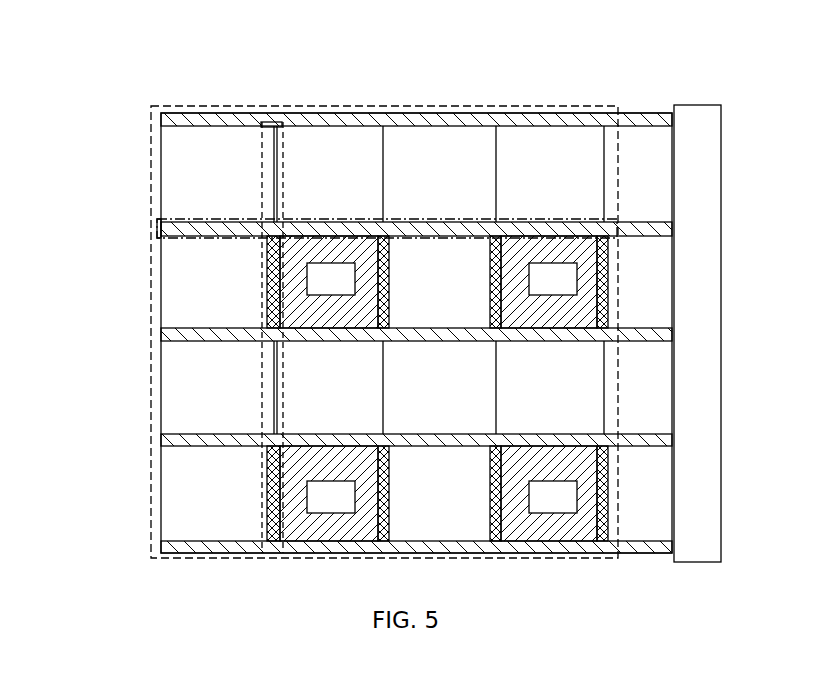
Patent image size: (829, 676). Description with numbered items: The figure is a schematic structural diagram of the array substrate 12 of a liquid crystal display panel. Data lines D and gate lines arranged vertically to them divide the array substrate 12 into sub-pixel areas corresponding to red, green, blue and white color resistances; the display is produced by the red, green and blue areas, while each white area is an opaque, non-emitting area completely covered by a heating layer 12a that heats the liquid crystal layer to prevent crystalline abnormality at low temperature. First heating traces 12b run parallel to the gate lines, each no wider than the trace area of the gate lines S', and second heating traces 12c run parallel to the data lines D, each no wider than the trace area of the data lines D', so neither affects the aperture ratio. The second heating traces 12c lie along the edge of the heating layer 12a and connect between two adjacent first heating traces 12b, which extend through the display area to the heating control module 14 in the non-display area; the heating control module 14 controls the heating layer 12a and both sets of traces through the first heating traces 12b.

The array substrate 12 is at (428, 106).
The heating layer 12a is at (280, 259).
The first heating traces 12b is at (158, 225).
The second heating traces 12c is at (266, 310).
The heating control module 14 is at (705, 152).
The data lines D is at (274, 305).
The trace area of the data lines D' is at (307, 149).
The trace area of the gate lines S' is at (193, 199).